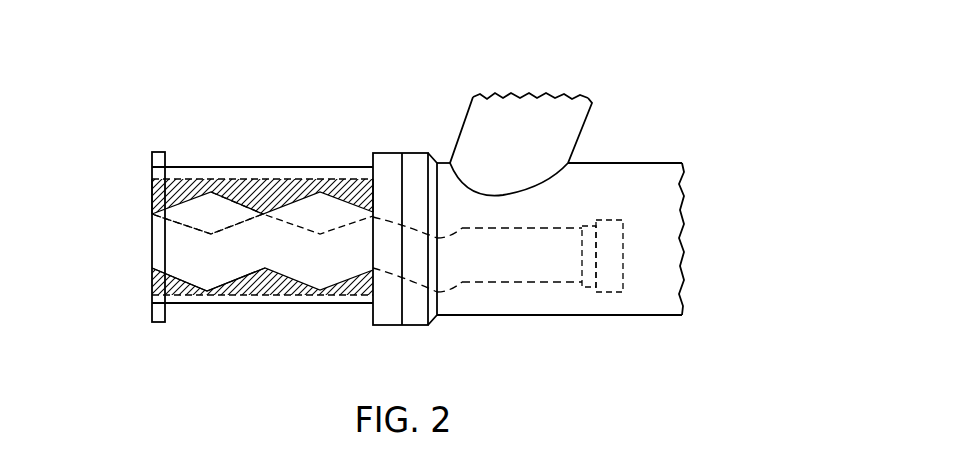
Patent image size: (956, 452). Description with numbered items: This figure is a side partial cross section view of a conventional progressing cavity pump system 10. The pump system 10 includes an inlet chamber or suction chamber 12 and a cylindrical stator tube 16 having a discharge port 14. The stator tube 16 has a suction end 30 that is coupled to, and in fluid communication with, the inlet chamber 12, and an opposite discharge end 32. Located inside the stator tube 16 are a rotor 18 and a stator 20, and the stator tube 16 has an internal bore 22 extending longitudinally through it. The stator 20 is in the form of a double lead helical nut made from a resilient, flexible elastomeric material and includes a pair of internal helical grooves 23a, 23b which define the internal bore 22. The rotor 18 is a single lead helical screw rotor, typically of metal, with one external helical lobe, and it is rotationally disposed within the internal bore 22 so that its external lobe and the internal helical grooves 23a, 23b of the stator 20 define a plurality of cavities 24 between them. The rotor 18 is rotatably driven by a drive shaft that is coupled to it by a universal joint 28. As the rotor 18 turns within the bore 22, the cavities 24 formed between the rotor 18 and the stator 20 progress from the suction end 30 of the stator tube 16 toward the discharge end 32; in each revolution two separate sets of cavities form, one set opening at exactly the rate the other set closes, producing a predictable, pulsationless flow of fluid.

The progressing cavity pump system 10 is at (347, 57).
The inlet chamber 12 is at (552, 217).
The discharge port 14 is at (263, 228).
The stator tube 16 is at (262, 168).
The rotor 18 is at (205, 272).
The stator 20 is at (268, 287).
The internal bore 22 is at (309, 195).
The internal helical groove 23a is at (340, 195).
The internal helical groove 23b is at (224, 190).
The cavities 24 is at (200, 227).
The universal joint 28 is at (612, 234).
The suction end 30 is at (476, 201).
The discharge end 32 is at (110, 219).